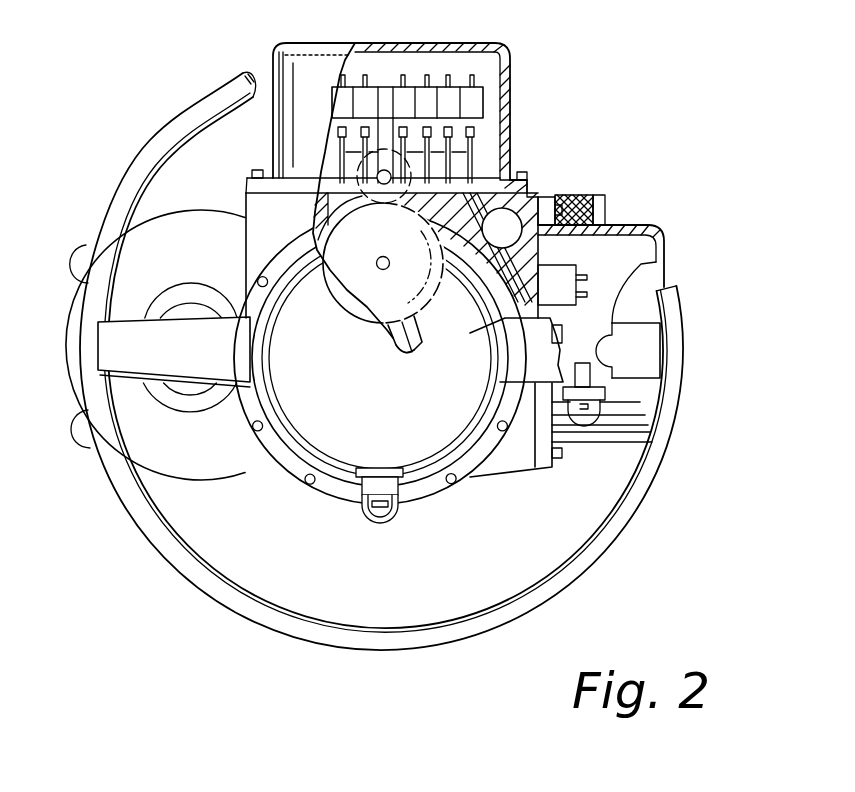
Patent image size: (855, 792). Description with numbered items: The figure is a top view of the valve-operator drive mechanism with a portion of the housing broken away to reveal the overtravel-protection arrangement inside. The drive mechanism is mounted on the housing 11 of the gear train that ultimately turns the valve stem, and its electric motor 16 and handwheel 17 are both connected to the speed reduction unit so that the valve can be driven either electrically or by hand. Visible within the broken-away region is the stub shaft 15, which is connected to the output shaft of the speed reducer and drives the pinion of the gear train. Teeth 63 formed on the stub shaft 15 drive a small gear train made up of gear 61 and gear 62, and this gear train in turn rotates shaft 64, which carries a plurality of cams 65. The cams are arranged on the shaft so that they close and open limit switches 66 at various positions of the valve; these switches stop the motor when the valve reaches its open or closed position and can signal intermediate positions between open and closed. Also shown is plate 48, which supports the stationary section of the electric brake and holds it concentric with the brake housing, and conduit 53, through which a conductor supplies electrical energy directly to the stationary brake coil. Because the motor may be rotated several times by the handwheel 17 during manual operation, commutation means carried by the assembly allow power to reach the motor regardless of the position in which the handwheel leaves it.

The housing 11 is at (75, 384).
The stub shaft 15 is at (400, 357).
The electric motor 16 is at (335, 386).
The handwheel 17 is at (686, 432).
The plate 48 is at (462, 332).
The conduit 53 is at (588, 192).
The gear 61 is at (437, 285).
The gear 62 is at (357, 228).
The teeth 63 is at (427, 340).
The shaft 64 is at (384, 185).
The cams 65 is at (474, 160).
The limit switches 66 is at (483, 105).